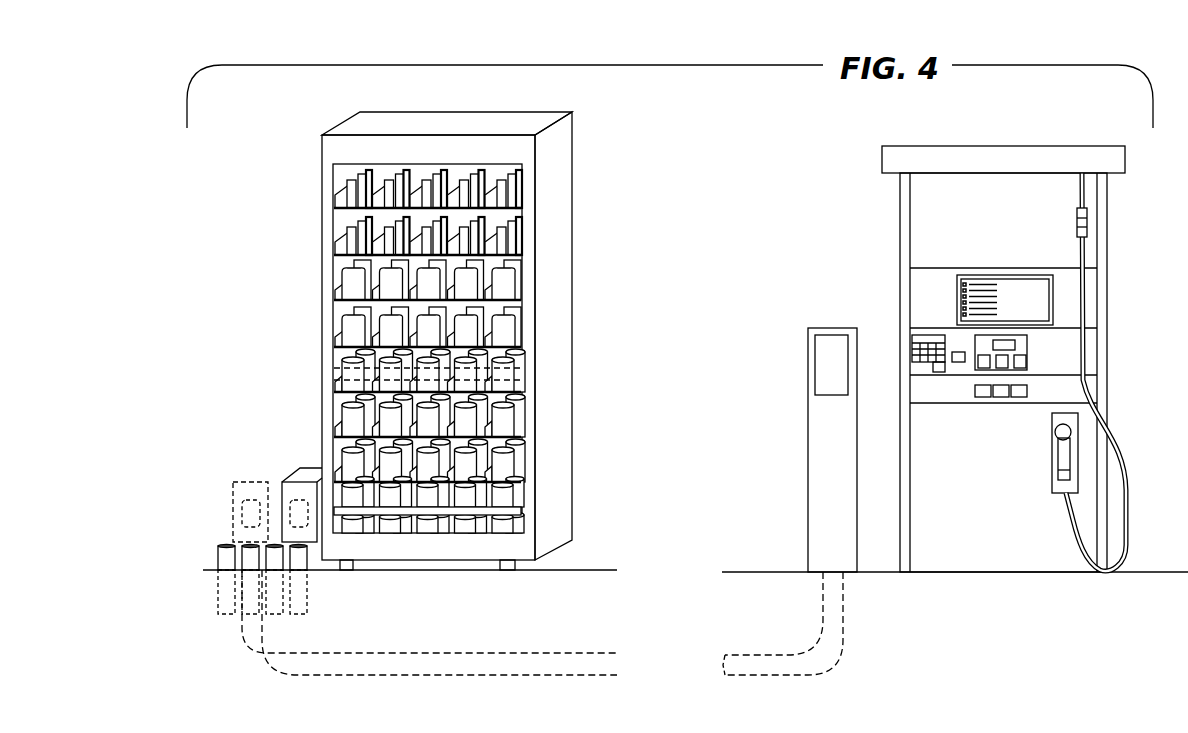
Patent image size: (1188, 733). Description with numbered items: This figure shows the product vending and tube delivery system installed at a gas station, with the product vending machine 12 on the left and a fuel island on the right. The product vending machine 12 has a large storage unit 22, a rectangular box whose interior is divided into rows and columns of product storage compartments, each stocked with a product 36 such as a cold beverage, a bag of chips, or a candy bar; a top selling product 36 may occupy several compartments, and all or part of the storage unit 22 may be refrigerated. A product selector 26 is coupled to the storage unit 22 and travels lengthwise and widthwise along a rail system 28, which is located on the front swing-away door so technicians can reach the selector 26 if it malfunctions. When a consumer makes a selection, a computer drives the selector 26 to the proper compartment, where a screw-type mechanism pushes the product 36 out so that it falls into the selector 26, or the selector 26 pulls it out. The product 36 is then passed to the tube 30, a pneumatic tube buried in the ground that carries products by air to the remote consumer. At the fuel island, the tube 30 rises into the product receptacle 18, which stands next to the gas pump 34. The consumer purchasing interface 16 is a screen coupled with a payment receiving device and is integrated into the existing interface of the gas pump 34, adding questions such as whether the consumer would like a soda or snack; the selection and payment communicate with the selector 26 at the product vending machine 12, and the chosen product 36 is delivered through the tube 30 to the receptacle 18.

The product vending machine 12 is at (298, 320).
The storage unit 22 is at (556, 353).
The rail system 28 is at (517, 512).
The product selector 26 is at (305, 490).
The product 36 is at (425, 500).
The tube 30 is at (262, 650).
The product receptacle 18 is at (822, 357).
The consumer purchasing interface 16 is at (1038, 298).
The gas pump 34 is at (1118, 158).